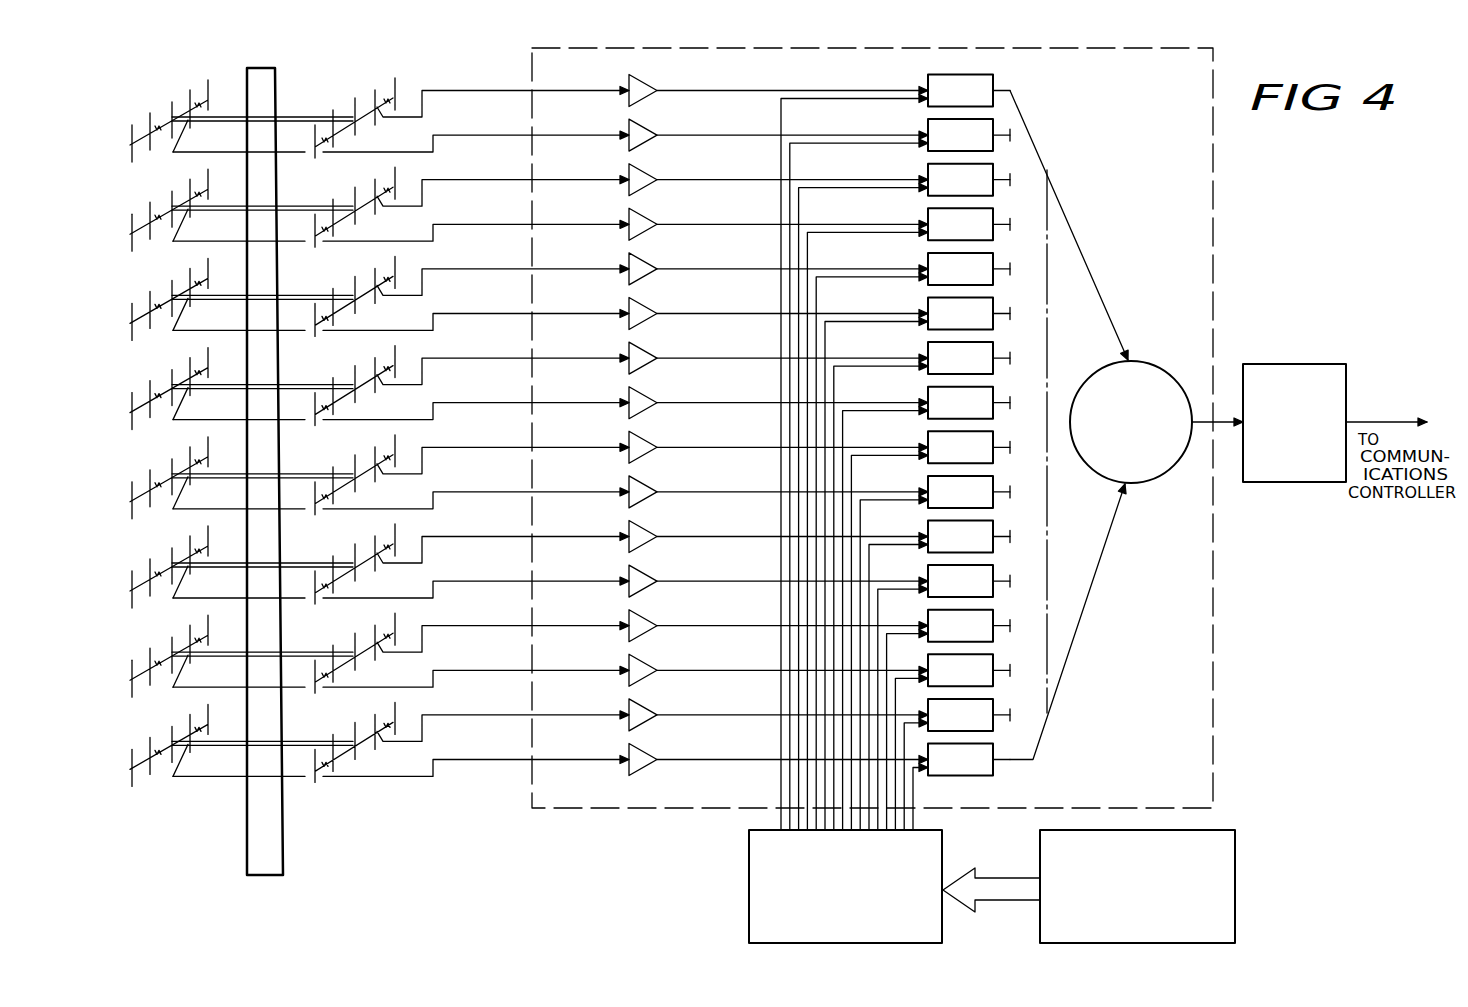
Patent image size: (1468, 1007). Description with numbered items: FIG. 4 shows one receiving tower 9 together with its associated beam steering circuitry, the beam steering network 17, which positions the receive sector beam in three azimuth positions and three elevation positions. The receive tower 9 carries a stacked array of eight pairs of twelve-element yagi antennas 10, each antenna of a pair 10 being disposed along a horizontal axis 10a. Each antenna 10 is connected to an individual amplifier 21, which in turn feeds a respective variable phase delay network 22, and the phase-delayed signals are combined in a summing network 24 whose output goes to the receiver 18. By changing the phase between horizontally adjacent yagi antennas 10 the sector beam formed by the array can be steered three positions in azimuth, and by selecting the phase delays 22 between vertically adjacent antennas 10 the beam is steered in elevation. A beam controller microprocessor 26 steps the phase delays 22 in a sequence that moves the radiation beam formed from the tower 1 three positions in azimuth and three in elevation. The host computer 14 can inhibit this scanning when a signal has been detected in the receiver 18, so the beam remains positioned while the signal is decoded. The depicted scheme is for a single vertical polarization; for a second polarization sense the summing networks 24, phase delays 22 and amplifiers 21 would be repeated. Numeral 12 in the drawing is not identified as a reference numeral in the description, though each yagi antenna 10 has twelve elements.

The tower 1 is at (127, 129).
The receive tower 9 is at (274, 80).
The yagi antenna 10 is at (233, 149).
The horizontal axis 10a is at (305, 118).
The Yagi antenna 12 is at (173, 105).
The host computer 14 is at (1040, 850).
The beam steering network 17 is at (1213, 290).
The receiver 18 is at (1293, 482).
The amplifier 21 is at (657, 99).
The variable phase delay network 22 is at (948, 100).
The summing network 24 is at (1150, 484).
The beam controller microprocessor 26 is at (749, 888).